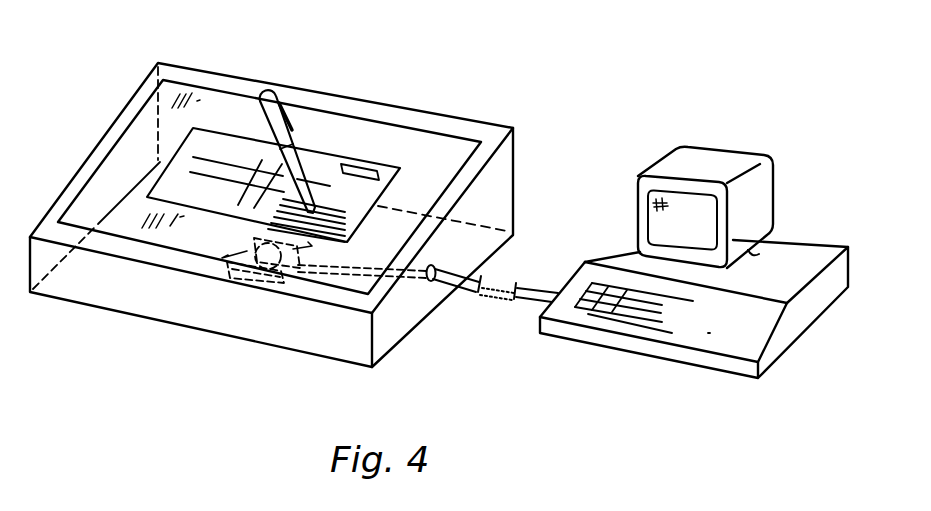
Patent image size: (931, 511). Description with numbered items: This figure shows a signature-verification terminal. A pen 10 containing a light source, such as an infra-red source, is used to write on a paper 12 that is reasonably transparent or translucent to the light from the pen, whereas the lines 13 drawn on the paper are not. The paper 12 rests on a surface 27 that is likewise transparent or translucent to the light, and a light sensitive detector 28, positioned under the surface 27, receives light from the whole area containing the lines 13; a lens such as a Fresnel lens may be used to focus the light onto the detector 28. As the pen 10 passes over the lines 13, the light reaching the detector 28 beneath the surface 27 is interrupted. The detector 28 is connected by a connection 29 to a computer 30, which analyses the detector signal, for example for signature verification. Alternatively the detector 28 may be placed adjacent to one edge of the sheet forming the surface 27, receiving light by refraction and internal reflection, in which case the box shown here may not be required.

The pen / stylus 10 is at (262, 118).
The paper 12 is at (327, 164).
The lines 13 is at (338, 211).
The surface 27 is at (111, 186).
The light sensitive detector 28 is at (228, 256).
The connection 29 is at (537, 292).
The computer 30 is at (619, 372).